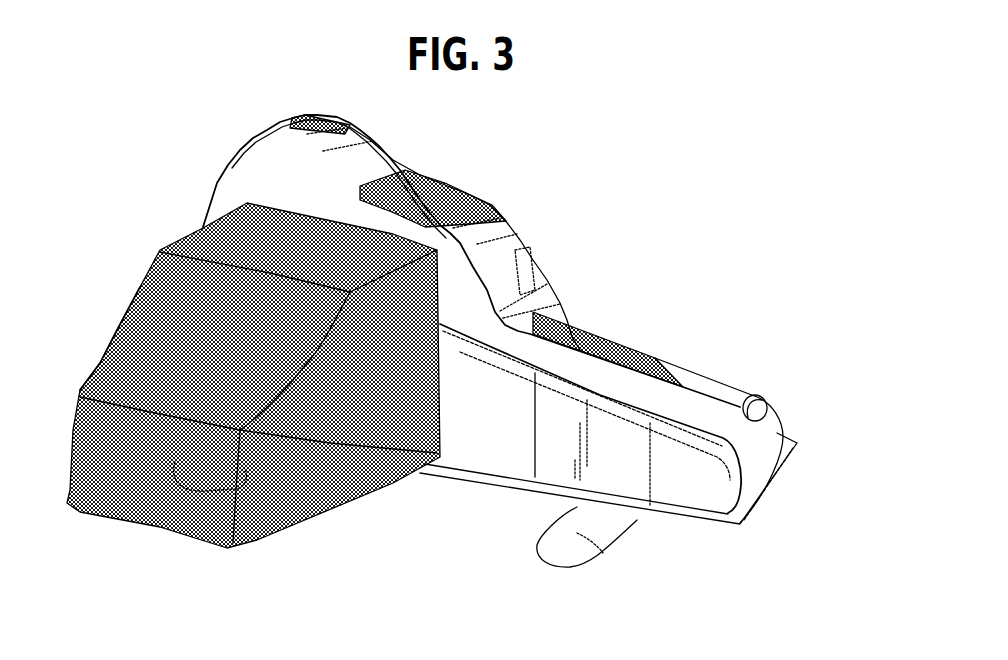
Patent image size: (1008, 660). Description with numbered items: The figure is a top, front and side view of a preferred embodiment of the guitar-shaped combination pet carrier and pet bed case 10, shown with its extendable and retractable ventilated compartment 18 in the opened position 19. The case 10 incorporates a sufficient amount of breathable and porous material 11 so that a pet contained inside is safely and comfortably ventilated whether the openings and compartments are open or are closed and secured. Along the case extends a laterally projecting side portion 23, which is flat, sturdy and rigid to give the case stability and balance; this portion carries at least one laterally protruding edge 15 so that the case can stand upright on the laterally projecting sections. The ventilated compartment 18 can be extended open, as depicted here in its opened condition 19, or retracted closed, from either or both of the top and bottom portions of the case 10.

The combination pet carrier and pet bed case 10 is at (858, 334).
The breathable and porous material 11 is at (435, 186).
The laterally protruding edge 15 is at (172, 530).
The extendable and retractable ventilated compartment 18 is at (247, 203).
The open position of the ventilated compartment 19 is at (111, 340).
The laterally projecting side portion of the case 23 is at (690, 527).